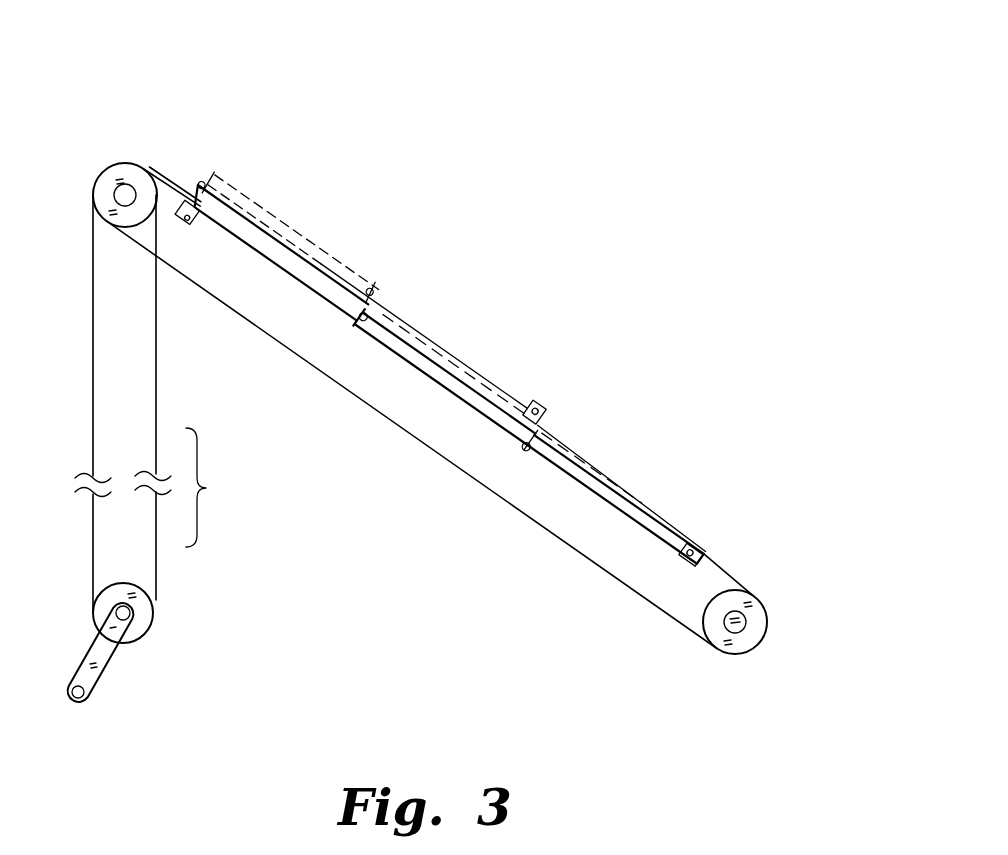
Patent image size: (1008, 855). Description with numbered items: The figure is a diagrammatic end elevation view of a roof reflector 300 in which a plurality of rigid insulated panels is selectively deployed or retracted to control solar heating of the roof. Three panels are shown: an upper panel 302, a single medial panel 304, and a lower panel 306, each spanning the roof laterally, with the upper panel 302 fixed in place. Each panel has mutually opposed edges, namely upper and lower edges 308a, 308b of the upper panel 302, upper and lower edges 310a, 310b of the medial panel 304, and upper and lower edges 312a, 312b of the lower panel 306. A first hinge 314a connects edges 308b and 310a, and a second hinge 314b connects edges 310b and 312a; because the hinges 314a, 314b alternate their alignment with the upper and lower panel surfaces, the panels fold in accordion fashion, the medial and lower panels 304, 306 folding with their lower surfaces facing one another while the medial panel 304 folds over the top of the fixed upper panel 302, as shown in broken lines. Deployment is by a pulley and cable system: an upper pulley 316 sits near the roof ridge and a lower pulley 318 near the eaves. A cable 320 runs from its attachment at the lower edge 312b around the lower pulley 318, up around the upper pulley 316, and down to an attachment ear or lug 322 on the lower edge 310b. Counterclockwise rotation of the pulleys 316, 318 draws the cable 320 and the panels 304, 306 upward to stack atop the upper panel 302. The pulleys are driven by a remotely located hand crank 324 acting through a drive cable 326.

The roof reflector 300 is at (634, 92).
The upper panel 302 is at (268, 270).
The medial panel 304 is at (250, 207).
The lower panel 306 is at (308, 235).
The upper edge of the upper panel 308a is at (193, 227).
The lower edge of the upper panel 308b is at (318, 330).
The upper edge of the medial panel 310a is at (372, 340).
The lower edge of the medial panel 310b is at (510, 443).
The upper edge of the lower panel 312a is at (582, 500).
The lower edge of the lower panel 312b is at (678, 560).
The first hinge 314a is at (200, 180).
The second hinge 314b is at (538, 452).
The upper pulley 316 is at (100, 171).
The lower pulley 318 is at (760, 640).
The cable 320 is at (405, 311).
The attachment ear or lug 322 is at (548, 408).
The hand crank 324 is at (90, 625).
The drive cable 326 is at (153, 407).